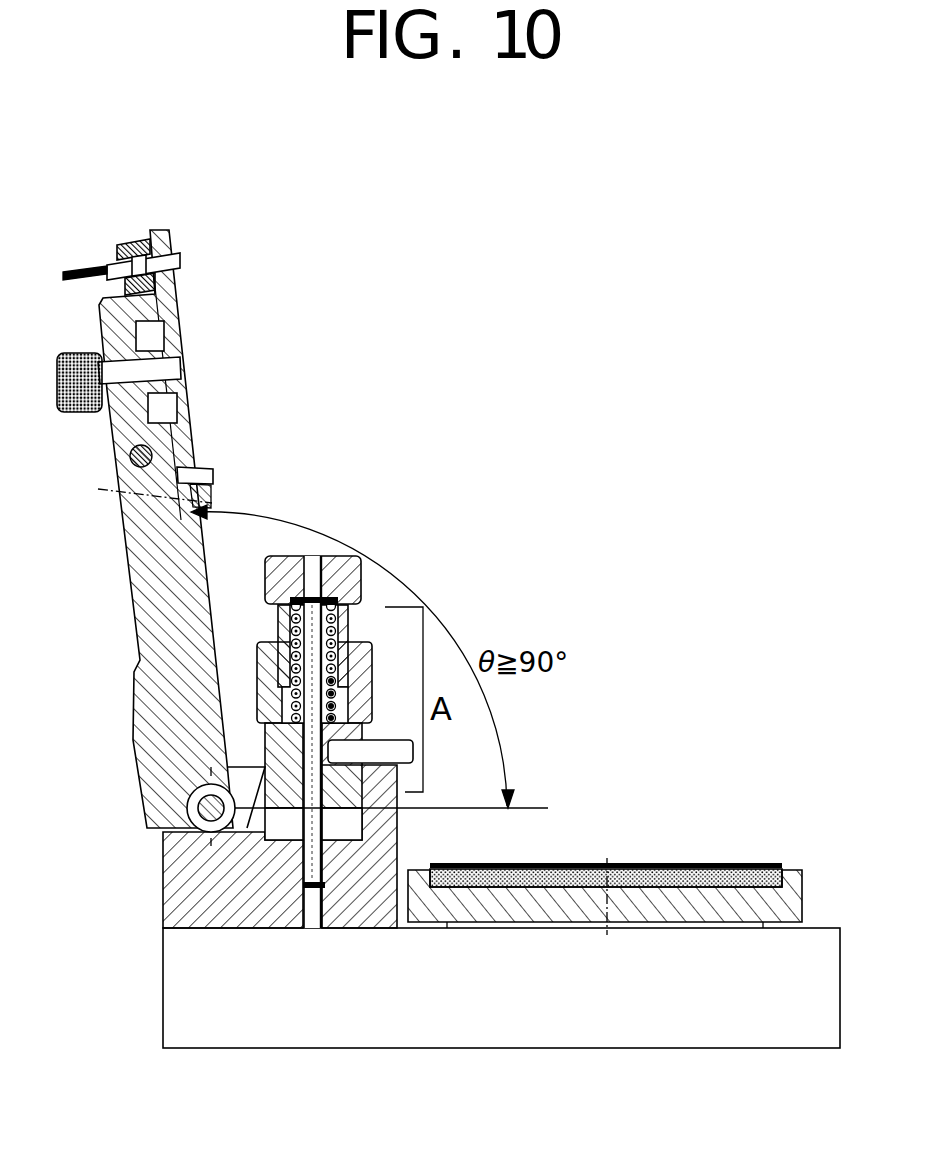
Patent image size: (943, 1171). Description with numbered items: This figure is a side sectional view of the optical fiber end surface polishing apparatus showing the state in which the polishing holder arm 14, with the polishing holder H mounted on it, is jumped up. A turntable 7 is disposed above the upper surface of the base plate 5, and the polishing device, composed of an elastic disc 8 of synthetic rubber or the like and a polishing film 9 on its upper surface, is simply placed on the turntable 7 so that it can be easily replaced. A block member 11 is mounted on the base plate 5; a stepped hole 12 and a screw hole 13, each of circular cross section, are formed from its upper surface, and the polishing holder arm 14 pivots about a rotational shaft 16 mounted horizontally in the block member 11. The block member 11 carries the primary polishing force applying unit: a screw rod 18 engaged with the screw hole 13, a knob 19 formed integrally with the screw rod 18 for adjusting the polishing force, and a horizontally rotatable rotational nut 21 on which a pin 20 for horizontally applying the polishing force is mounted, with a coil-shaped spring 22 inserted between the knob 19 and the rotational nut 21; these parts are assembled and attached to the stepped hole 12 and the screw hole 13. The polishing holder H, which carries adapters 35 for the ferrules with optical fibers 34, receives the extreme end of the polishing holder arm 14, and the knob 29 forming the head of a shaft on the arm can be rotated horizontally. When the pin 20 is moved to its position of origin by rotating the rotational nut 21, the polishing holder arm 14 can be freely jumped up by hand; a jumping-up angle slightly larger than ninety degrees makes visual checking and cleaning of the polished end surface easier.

The base plate 5 is at (812, 1020).
The turntable 7 is at (790, 903).
The elastic disc 8 is at (748, 868).
The polishing film 9 is at (636, 862).
The block member 11 is at (178, 884).
The stepped hole 12 is at (366, 830).
The screw hole 13 is at (312, 920).
The polishing holder arm 14 is at (141, 660).
The rotational shaft 16 is at (198, 800).
The screw rod 18 is at (316, 856).
The knob 19 is at (273, 578).
The pin 20 is at (390, 736).
The rotational nut 21 is at (360, 664).
The coil-shaped spring 22 is at (278, 627).
The knob 29 is at (80, 415).
The ferrules with optical fibers 34 is at (178, 253).
The adapters 35 is at (130, 243).
The polishing holder H is at (190, 322).